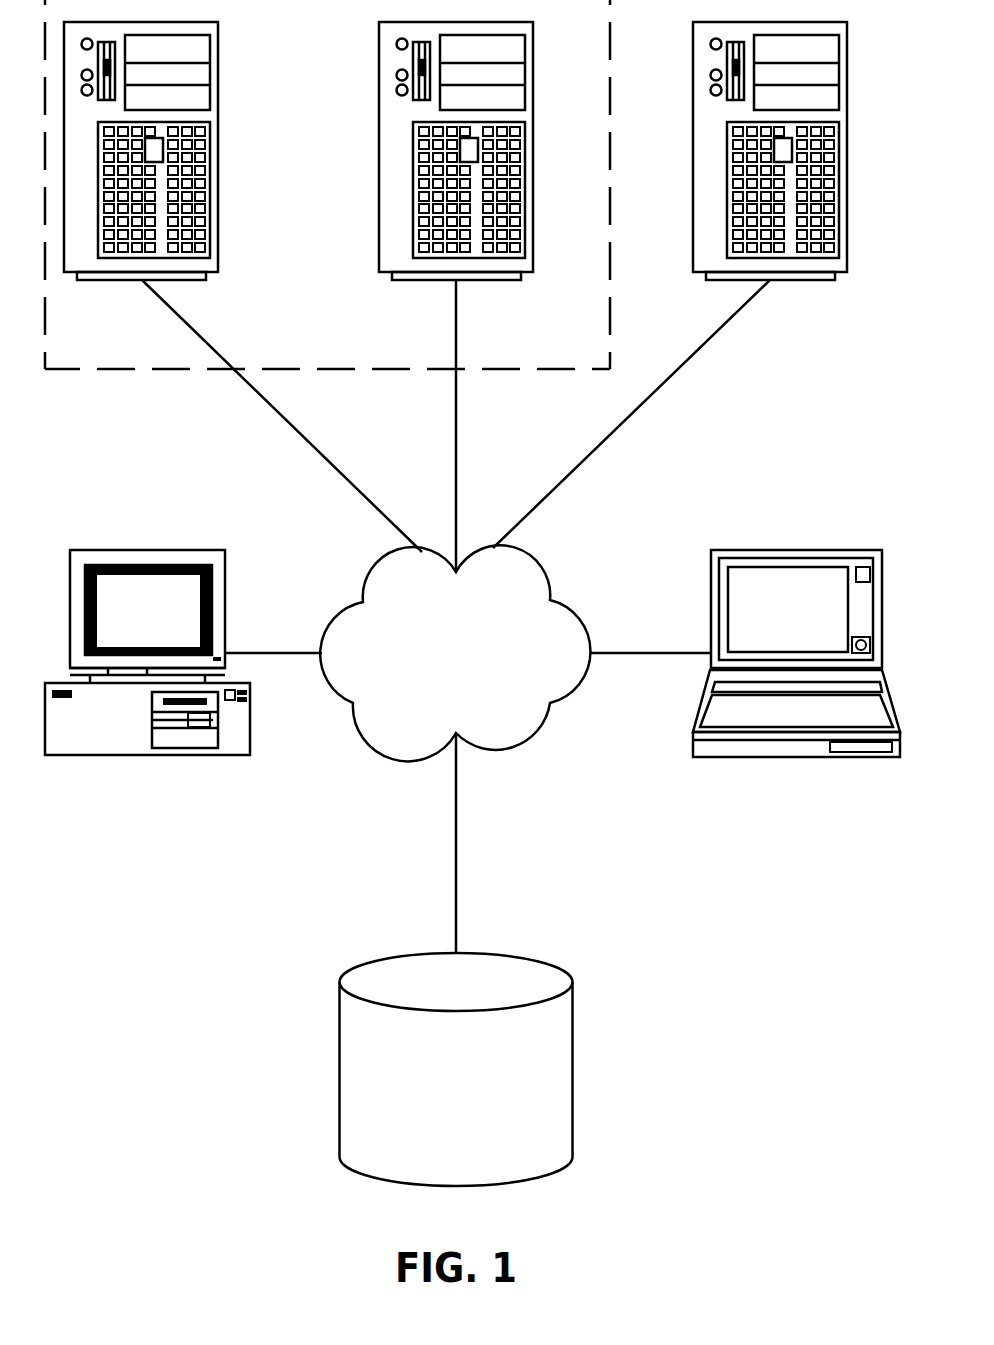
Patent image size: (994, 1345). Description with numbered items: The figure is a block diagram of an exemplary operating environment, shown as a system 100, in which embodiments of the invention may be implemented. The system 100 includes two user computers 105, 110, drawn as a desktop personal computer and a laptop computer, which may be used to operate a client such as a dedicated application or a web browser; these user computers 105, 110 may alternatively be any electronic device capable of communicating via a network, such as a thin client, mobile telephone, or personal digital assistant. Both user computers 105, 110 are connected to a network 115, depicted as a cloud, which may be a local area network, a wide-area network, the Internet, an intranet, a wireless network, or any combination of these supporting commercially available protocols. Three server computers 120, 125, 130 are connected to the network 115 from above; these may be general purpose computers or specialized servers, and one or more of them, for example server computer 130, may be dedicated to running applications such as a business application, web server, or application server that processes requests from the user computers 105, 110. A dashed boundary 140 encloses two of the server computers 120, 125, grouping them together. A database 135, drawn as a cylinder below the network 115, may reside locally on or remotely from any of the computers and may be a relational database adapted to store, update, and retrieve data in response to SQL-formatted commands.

The system 100 is at (258, 902).
The user computer 105 is at (233, 757).
The user computer 110 is at (843, 757).
The network 115 is at (535, 735).
The server computer 120 is at (205, 280).
The server computer 125 is at (508, 280).
The server computer 130 is at (826, 280).
The database 135 is at (533, 1178).
The server group 140 is at (70, 369).